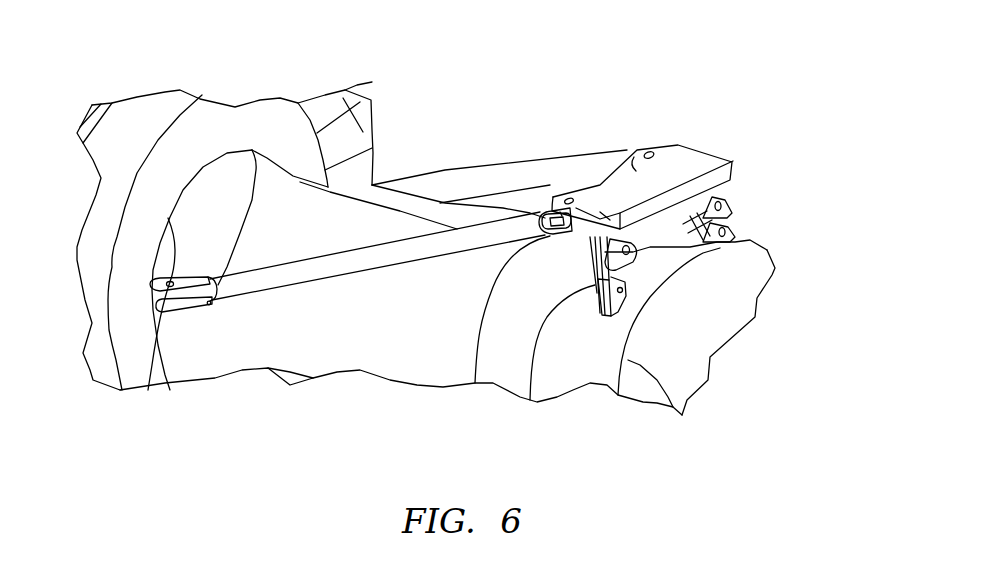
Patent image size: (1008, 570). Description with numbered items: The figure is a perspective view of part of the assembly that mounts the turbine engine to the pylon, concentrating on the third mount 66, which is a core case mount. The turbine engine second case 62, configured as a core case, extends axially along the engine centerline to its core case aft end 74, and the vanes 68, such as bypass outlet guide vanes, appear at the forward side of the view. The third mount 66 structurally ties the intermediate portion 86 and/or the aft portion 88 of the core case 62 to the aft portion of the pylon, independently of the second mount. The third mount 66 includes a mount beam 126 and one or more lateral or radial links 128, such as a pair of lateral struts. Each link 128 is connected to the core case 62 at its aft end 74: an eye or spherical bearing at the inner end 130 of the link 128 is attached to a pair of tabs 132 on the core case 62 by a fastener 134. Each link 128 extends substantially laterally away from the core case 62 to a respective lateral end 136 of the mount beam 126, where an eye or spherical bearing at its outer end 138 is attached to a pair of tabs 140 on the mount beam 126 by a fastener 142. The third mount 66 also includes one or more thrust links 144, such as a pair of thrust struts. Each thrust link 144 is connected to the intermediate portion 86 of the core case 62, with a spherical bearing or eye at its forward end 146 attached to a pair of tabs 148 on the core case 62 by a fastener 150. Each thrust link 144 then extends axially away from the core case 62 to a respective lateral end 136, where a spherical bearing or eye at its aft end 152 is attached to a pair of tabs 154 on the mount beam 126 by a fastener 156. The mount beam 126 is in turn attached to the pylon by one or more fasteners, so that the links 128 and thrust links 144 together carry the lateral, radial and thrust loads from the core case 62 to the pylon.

The turbine engine second case 62 is at (418, 382).
The third mount 66 is at (682, 139).
The vanes 68 is at (372, 82).
The core case aft end 74 is at (673, 410).
The intermediate portion 86 is at (218, 355).
The aft portion 88 is at (575, 380).
The mount beam 126 is at (697, 163).
The links 128 is at (732, 208).
The inner end 130 is at (590, 283).
The tabs 132 is at (587, 300).
The fastener 134 is at (622, 284).
The lateral end 136 is at (583, 188).
The outer end 138 is at (587, 242).
The tabs 140 is at (735, 242).
The fastener 142 is at (645, 200).
The thrust links 144 is at (372, 273).
The forward end 146 is at (207, 306).
The tabs 148 is at (192, 272).
The fastener 150 is at (168, 218).
The aft end 152 is at (462, 204).
The tabs 154 is at (566, 199).
The fastener 156 is at (569, 194).